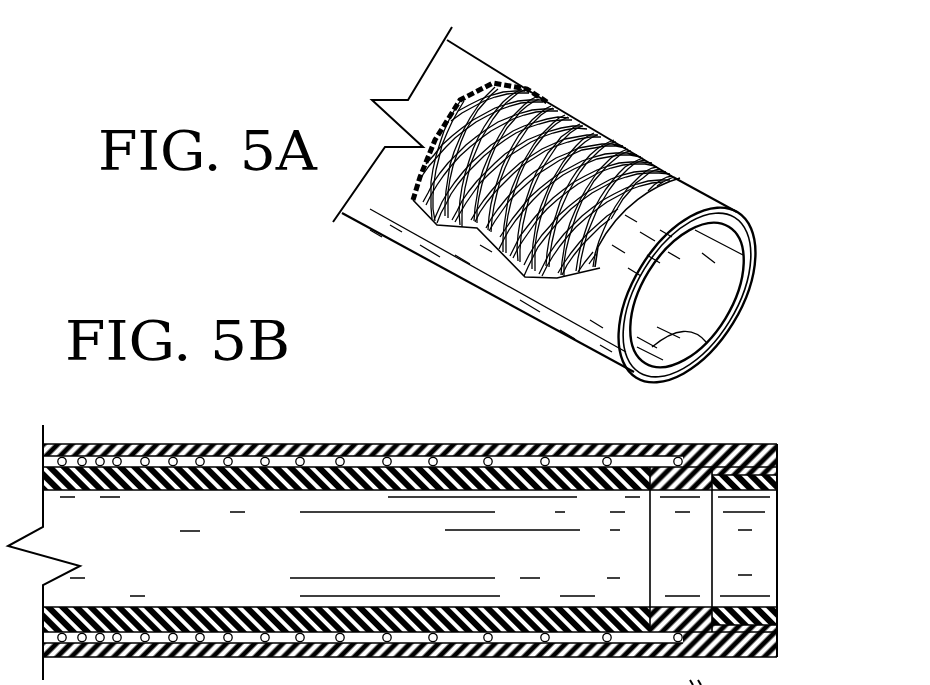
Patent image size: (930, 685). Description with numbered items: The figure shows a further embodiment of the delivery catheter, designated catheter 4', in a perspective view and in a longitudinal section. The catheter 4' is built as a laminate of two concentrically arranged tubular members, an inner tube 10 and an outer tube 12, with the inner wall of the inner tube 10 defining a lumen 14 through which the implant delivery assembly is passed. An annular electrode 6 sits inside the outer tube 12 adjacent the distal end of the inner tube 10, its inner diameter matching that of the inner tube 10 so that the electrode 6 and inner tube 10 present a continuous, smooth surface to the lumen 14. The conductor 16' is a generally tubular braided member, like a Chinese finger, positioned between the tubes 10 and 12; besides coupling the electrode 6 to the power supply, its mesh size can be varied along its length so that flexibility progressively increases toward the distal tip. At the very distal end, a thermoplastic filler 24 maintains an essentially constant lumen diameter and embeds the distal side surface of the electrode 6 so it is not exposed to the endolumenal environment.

In FIG. 5A, the catheter 4' is at (515, 52).
In FIG. 5B, the catheter 4' is at (811, 499).
In FIG. 5A, the electrode 6 is at (640, 203).
In FIG. 5B, the electrode 6 is at (691, 562).
In FIG. 5B, the inner tube 10 is at (50, 485).
In FIG. 5A, the outer tube 12 is at (386, 213).
In FIG. 5B, the outer tube 12 is at (463, 446).
In FIG. 5A, the lumen 14 is at (707, 301).
In FIG. 5B, the lumen 14 is at (381, 562).
In FIG. 5A, the conductor 16' is at (543, 176).
In FIG. 5B, the conductor 16' is at (370, 508).
In FIG. 5A, the filler 24 is at (700, 207).
In FIG. 5B, the filler 24 is at (738, 612).